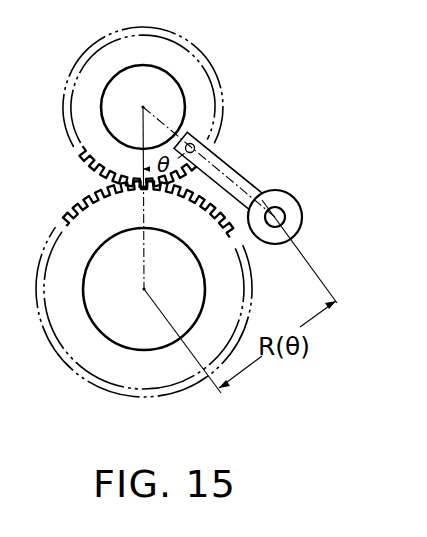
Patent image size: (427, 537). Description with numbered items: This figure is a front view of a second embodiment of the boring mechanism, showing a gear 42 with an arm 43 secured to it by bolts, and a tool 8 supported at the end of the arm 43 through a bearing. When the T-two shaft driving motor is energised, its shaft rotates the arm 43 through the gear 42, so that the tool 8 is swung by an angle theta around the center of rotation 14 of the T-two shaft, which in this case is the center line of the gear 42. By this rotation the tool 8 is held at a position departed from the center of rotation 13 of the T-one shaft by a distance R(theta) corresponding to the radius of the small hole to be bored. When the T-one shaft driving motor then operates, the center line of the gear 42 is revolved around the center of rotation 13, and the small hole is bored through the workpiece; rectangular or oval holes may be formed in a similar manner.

The gear 42 is at (193, 65).
The center of rotation of T2 shaft 14 is at (143, 107).
The center of rotation of T1 shaft 13 is at (144, 289).
The arm 43 is at (222, 172).
The tool 8 is at (285, 217).